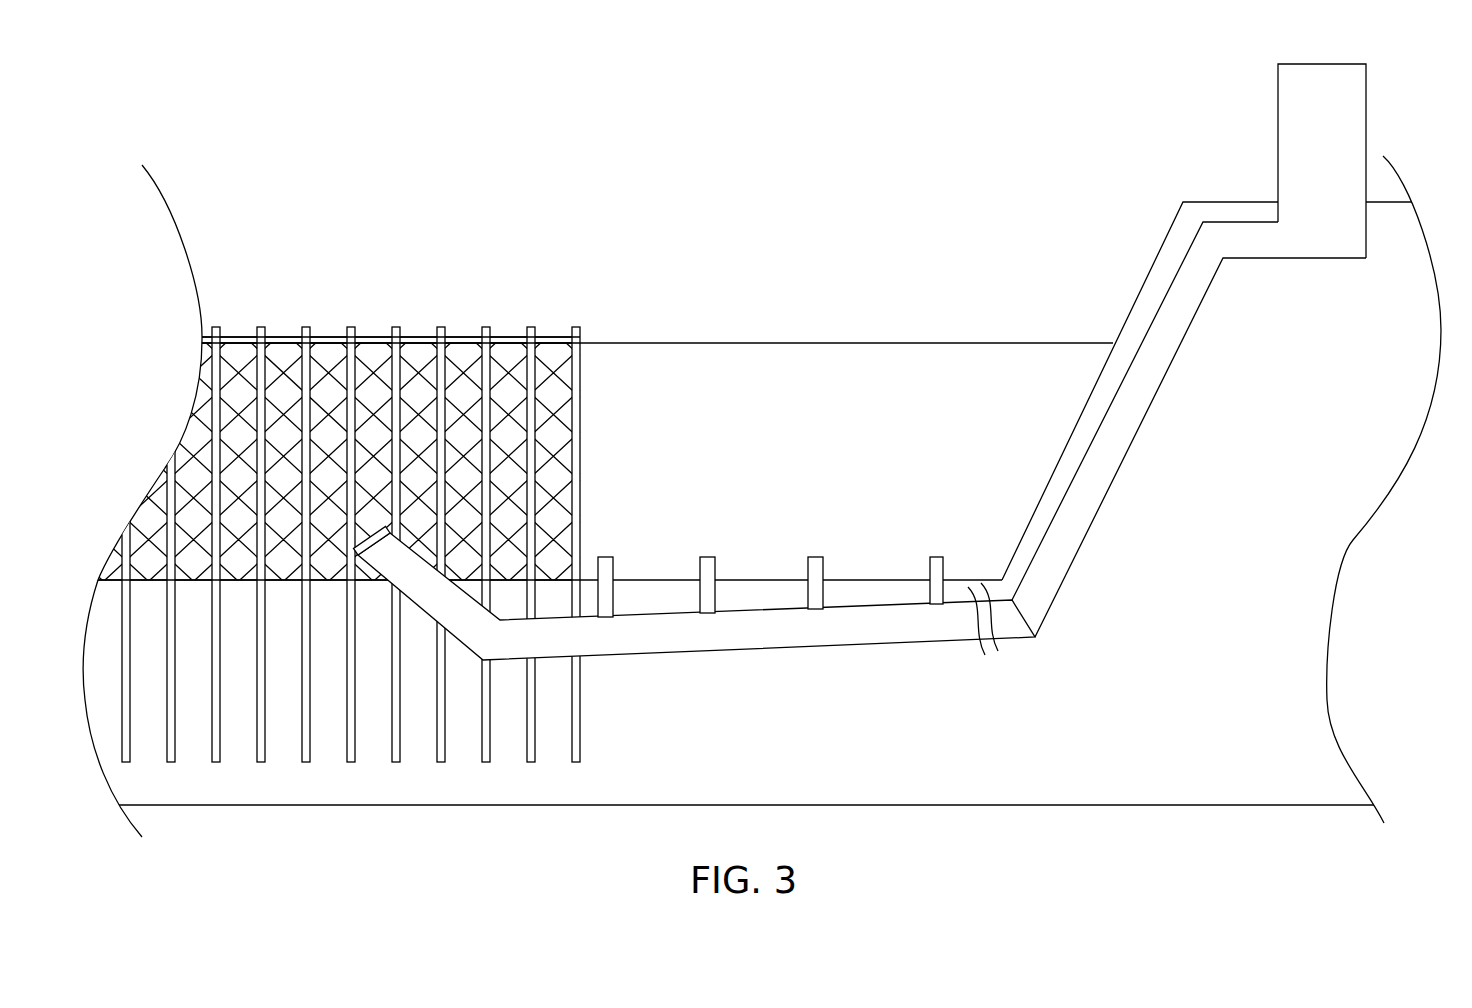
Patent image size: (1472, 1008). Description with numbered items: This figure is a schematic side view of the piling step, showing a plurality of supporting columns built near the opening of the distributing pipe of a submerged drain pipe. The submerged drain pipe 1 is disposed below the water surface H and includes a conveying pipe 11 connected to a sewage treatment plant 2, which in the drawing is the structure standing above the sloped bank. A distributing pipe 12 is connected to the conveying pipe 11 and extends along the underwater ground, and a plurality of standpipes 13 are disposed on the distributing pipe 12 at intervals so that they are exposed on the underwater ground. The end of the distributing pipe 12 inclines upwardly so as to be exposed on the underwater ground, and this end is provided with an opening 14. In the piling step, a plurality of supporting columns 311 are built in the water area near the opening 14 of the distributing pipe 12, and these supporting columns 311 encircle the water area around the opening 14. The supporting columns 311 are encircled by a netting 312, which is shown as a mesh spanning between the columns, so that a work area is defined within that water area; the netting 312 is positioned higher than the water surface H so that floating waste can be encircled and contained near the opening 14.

The submerged drain pipe 1 is at (887, 431).
The conveying pipe 11 is at (1090, 477).
The distributing pipe 12 is at (887, 620).
The standpipes 13 is at (817, 557).
The opening 14 is at (370, 537).
The sewage treatment plant 2 is at (1337, 115).
The supporting columns 311 is at (483, 337).
The netting 312 is at (331, 440).
The water surface H is at (713, 343).